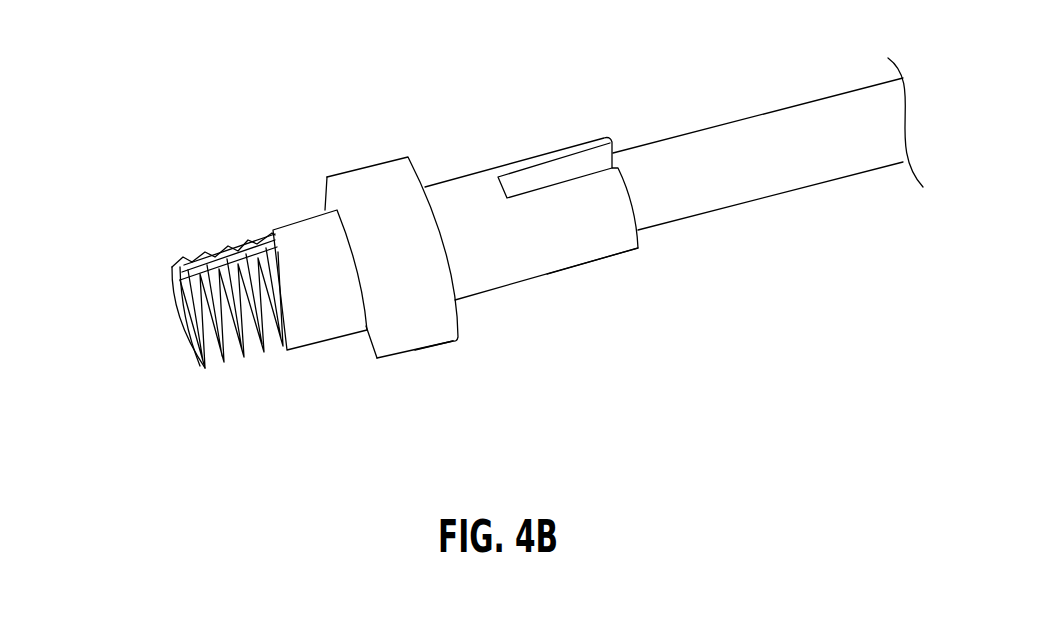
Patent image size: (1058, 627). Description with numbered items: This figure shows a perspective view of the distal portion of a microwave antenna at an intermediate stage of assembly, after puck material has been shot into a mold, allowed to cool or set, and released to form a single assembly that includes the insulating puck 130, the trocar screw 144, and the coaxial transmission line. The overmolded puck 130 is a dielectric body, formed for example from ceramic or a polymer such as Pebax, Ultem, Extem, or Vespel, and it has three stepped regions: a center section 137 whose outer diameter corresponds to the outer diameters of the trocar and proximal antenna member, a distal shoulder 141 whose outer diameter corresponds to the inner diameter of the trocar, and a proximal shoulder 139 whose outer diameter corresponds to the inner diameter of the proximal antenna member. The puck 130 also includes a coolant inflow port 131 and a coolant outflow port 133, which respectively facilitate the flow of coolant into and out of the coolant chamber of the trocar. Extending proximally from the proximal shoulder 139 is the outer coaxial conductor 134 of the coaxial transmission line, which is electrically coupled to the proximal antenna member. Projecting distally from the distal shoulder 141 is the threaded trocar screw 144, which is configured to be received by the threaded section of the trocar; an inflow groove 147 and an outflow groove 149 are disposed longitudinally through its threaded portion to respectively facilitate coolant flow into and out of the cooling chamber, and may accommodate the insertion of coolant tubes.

The insulating puck 130 is at (367, 165).
The coolant inflow port 131 is at (557, 173).
The coolant outflow port 133 is at (587, 267).
The outer coaxial conductor 134 is at (860, 87).
The center section 137 is at (417, 333).
The proximal shoulder 139 is at (503, 265).
The distal shoulder 141 is at (320, 347).
The trocar screw 144 is at (228, 242).
The inflow groove 147 is at (180, 267).
The outflow groove 149 is at (248, 363).